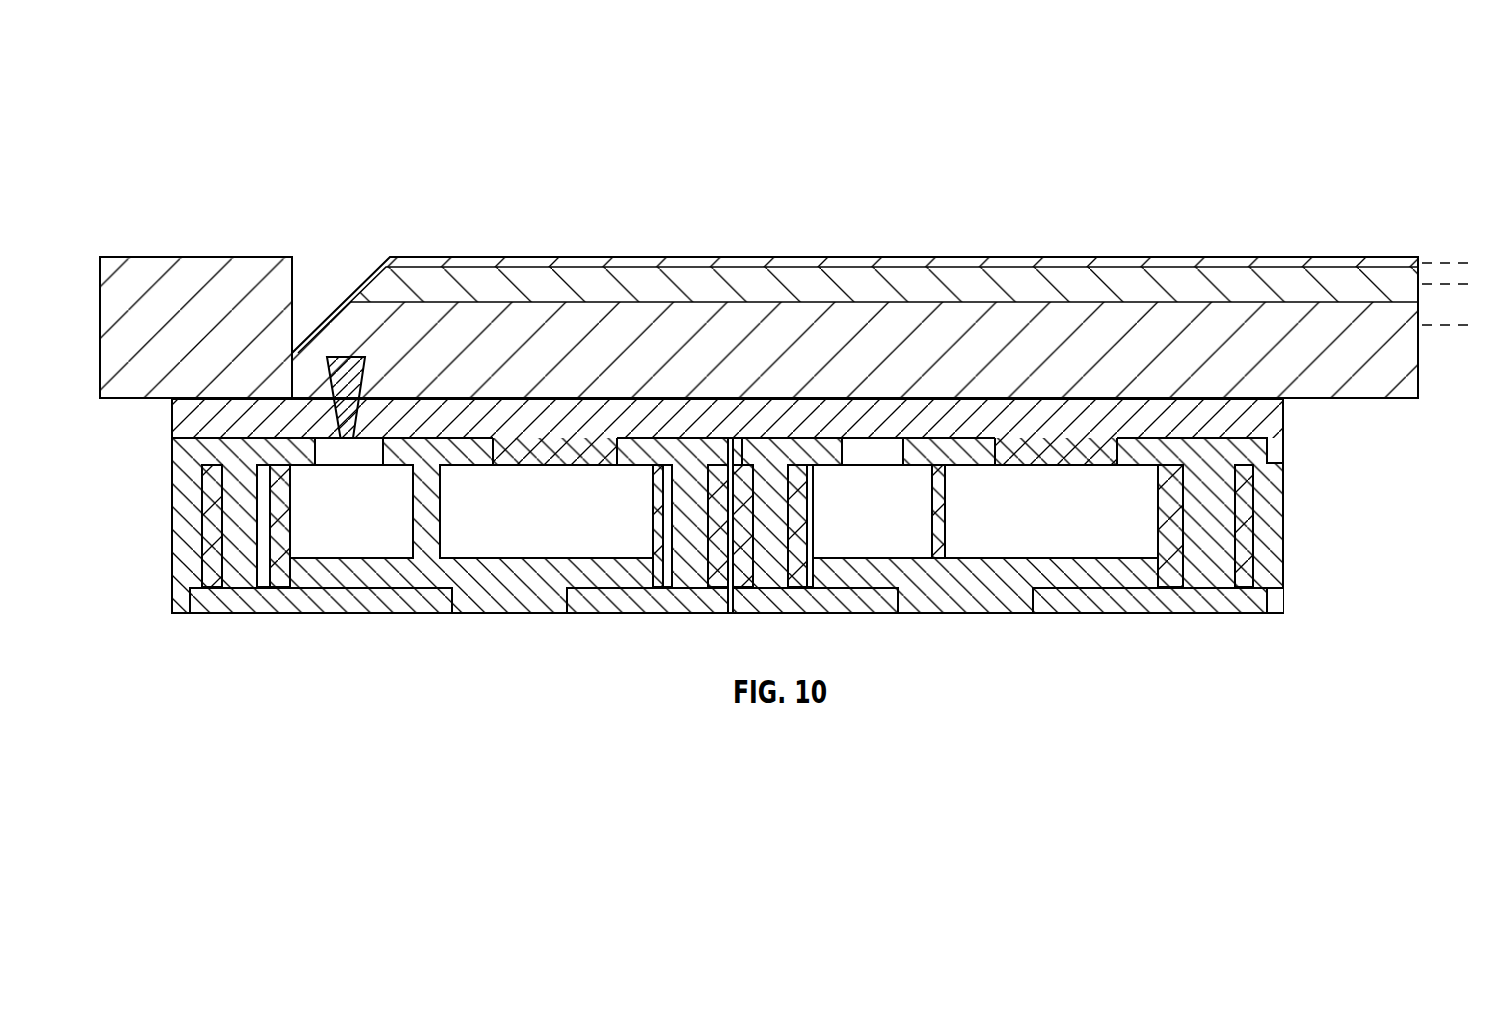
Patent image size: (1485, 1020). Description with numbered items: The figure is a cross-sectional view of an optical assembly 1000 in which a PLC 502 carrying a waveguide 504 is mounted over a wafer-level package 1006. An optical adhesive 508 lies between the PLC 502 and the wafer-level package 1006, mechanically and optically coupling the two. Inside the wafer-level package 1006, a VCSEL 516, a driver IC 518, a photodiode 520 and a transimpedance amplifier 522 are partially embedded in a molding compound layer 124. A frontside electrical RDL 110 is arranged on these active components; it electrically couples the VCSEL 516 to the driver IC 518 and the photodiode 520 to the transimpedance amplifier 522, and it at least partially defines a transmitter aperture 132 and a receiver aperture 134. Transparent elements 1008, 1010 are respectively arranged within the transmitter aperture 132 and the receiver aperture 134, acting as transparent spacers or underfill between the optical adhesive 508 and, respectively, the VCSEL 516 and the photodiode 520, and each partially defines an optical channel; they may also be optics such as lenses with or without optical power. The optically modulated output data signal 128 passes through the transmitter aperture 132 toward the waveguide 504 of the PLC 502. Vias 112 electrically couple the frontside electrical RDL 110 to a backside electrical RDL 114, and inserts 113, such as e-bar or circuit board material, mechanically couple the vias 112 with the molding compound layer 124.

The optical assembly 1000 is at (190, 74).
The PLC 502 is at (218, 343).
The waveguide 504 is at (598, 305).
The optically modulated output data signal 128 is at (353, 373).
The transparent element 1008 is at (328, 452).
The transmitter aperture 132 is at (371, 433).
The optical adhesive 508 is at (710, 433).
The receiver aperture 134 is at (846, 434).
The transparent element 1010 is at (889, 448).
The frontside electrical RDL 110 is at (1277, 455).
The vias 112 is at (1222, 557).
The backside electrical RDL 114 is at (1277, 603).
The inserts 113 is at (212, 518).
The VCSEL 516 is at (372, 525).
The driver IC 518 is at (567, 525).
The photodiode 520 is at (892, 525).
The transimpedance amplifier 522 is at (1074, 525).
The molding compound layer 124 is at (530, 595).
The wafer-level package 1006 is at (734, 550).